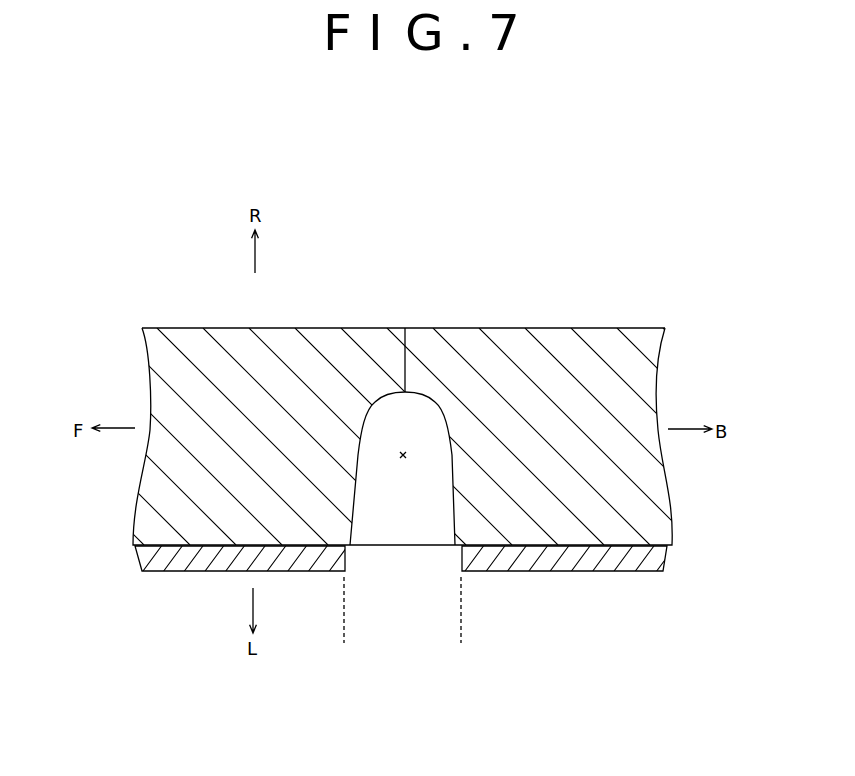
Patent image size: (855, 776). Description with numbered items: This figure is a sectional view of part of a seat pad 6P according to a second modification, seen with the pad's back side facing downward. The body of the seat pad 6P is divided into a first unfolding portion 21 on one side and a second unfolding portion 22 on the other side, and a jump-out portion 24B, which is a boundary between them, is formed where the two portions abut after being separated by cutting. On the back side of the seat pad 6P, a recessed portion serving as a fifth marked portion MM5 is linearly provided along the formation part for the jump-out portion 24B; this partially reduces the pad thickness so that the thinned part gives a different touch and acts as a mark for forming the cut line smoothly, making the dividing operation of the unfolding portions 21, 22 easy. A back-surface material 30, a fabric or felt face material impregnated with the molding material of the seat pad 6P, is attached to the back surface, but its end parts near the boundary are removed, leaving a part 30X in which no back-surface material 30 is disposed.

The seat pad 6P is at (600, 268).
The first unfolding portion 21 is at (318, 328).
The second unfolding portion 22 is at (502, 328).
The jump-out portion 24B is at (405, 373).
The fifth marked portion MM5 is at (403, 460).
The back-surface material 30 is at (220, 565).
The part in which no back-surface material is disposed 30X is at (461, 632).